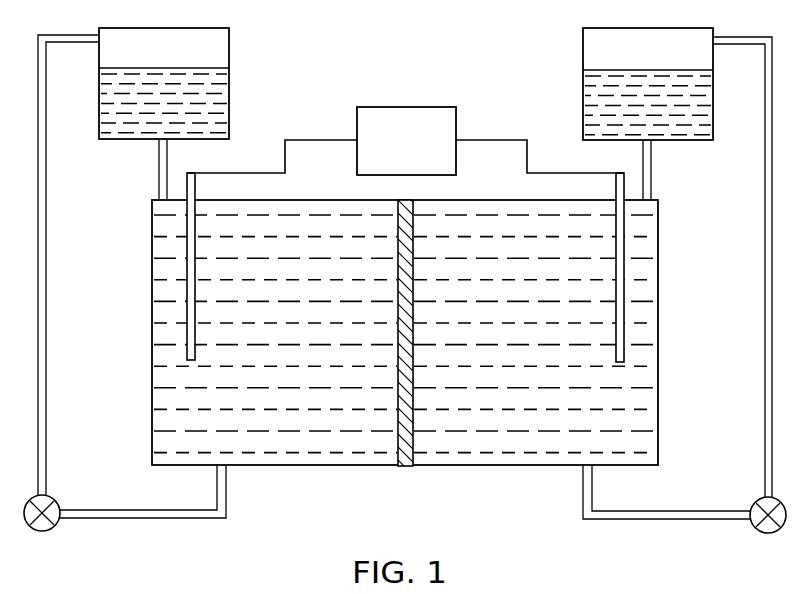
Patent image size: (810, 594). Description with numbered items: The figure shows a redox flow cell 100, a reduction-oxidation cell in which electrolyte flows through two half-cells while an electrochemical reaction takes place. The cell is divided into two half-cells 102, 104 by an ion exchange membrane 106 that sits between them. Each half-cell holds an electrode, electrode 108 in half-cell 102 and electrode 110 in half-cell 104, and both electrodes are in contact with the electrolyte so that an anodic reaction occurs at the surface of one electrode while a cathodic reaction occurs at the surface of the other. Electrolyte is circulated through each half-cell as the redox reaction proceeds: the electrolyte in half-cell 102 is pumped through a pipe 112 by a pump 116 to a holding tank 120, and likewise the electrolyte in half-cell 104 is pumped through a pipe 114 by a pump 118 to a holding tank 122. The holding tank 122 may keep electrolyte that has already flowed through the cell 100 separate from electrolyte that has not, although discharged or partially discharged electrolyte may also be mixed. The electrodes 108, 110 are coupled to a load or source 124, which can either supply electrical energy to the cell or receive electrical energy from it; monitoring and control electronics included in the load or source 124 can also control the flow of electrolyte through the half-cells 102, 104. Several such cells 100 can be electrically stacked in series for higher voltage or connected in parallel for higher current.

The redox flow cell 100 is at (492, 466).
The half-cell 102 is at (357, 250).
The half-cell 104 is at (499, 250).
The ion exchange membrane 106 is at (413, 353).
The electrode 108 is at (196, 318).
The electrode 110 is at (615, 318).
The pipe 112 is at (47, 322).
The pipe 114 is at (763, 287).
The pump 116 is at (50, 531).
The pump 118 is at (758, 533).
The holding tank 120 is at (230, 46).
The holding tank 122 is at (582, 47).
The load or source 124 is at (410, 107).